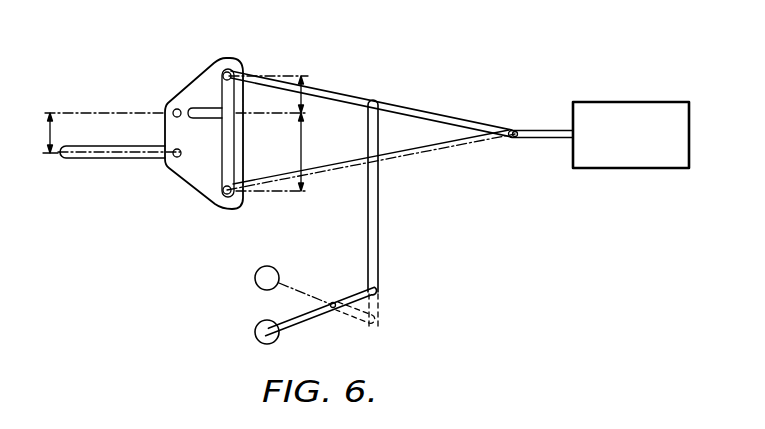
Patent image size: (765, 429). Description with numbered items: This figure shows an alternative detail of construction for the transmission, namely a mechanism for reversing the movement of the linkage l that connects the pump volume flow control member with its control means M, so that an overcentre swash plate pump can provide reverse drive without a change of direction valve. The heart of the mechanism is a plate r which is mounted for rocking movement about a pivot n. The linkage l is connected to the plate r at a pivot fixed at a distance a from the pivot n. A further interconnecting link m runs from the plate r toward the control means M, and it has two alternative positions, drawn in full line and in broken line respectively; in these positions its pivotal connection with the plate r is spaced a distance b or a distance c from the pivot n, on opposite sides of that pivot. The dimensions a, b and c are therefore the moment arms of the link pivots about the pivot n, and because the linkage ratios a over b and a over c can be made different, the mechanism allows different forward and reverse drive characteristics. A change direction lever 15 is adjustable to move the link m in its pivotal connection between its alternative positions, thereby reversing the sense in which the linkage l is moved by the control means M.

The plate r is at (212, 84).
The pivot n is at (176, 108).
The linkage l is at (82, 160).
The moment arm dimension a is at (98, 133).
The moment arm dimension b is at (301, 89).
The moment arm dimension c is at (275, 152).
The interconnecting link m is at (438, 116).
The control means M is at (629, 113).
The change direction lever 15 is at (261, 289).